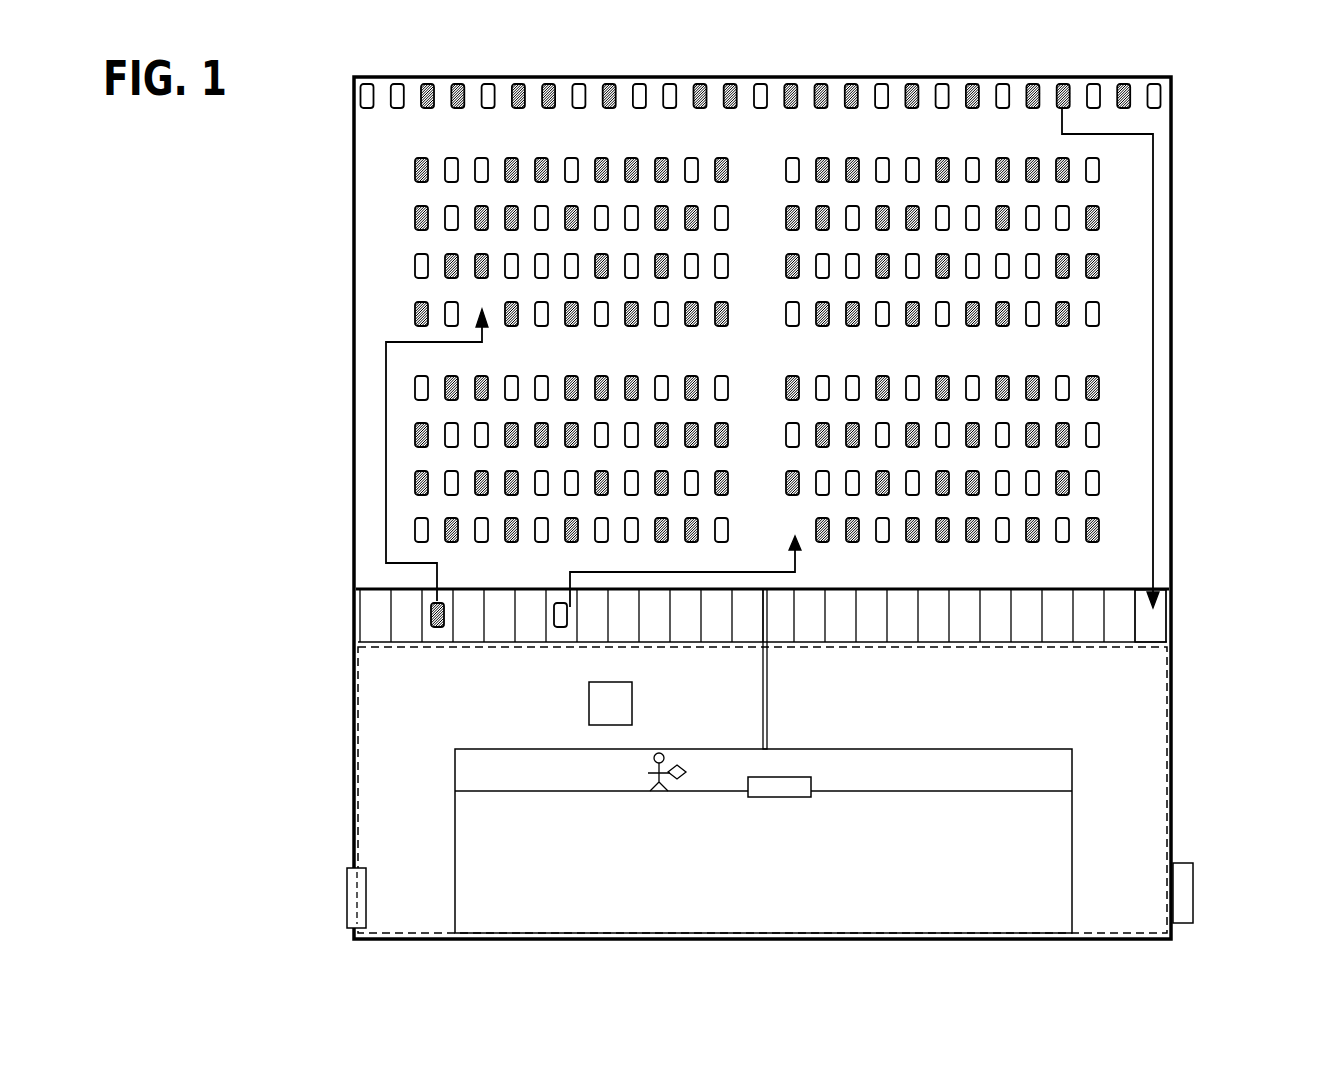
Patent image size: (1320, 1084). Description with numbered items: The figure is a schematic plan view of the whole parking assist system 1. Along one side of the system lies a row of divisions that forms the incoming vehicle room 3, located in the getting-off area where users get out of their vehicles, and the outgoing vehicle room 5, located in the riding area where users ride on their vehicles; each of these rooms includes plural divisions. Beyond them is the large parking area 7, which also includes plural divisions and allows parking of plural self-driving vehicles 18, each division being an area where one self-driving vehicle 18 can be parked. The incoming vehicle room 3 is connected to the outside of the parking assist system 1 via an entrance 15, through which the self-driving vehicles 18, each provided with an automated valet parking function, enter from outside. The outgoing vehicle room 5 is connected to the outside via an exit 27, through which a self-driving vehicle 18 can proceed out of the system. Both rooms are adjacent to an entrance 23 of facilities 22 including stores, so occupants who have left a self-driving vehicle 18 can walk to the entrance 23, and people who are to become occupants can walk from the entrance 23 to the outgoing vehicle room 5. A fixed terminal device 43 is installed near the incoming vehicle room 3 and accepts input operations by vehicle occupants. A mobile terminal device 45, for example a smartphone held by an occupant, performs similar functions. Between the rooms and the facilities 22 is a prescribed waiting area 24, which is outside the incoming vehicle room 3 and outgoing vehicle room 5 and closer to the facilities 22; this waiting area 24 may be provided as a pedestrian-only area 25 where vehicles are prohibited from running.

The parking assist system 1 is at (1245, 141).
The incoming vehicle room 3 is at (375, 622).
The outgoing vehicle room 5 is at (1152, 624).
The parking area 7 is at (381, 230).
The entrance 15 is at (347, 898).
The self-driving vehicle 18 is at (413, 170).
The facilities 22 is at (1035, 866).
The entrance 23 is at (798, 776).
The prescribed waiting area 24 is at (1173, 719).
The pedestrian-only area 25 is at (1072, 767).
The exit 27 is at (1193, 890).
The fixed terminal device 43 is at (632, 700).
The mobile terminal device 45 is at (686, 771).